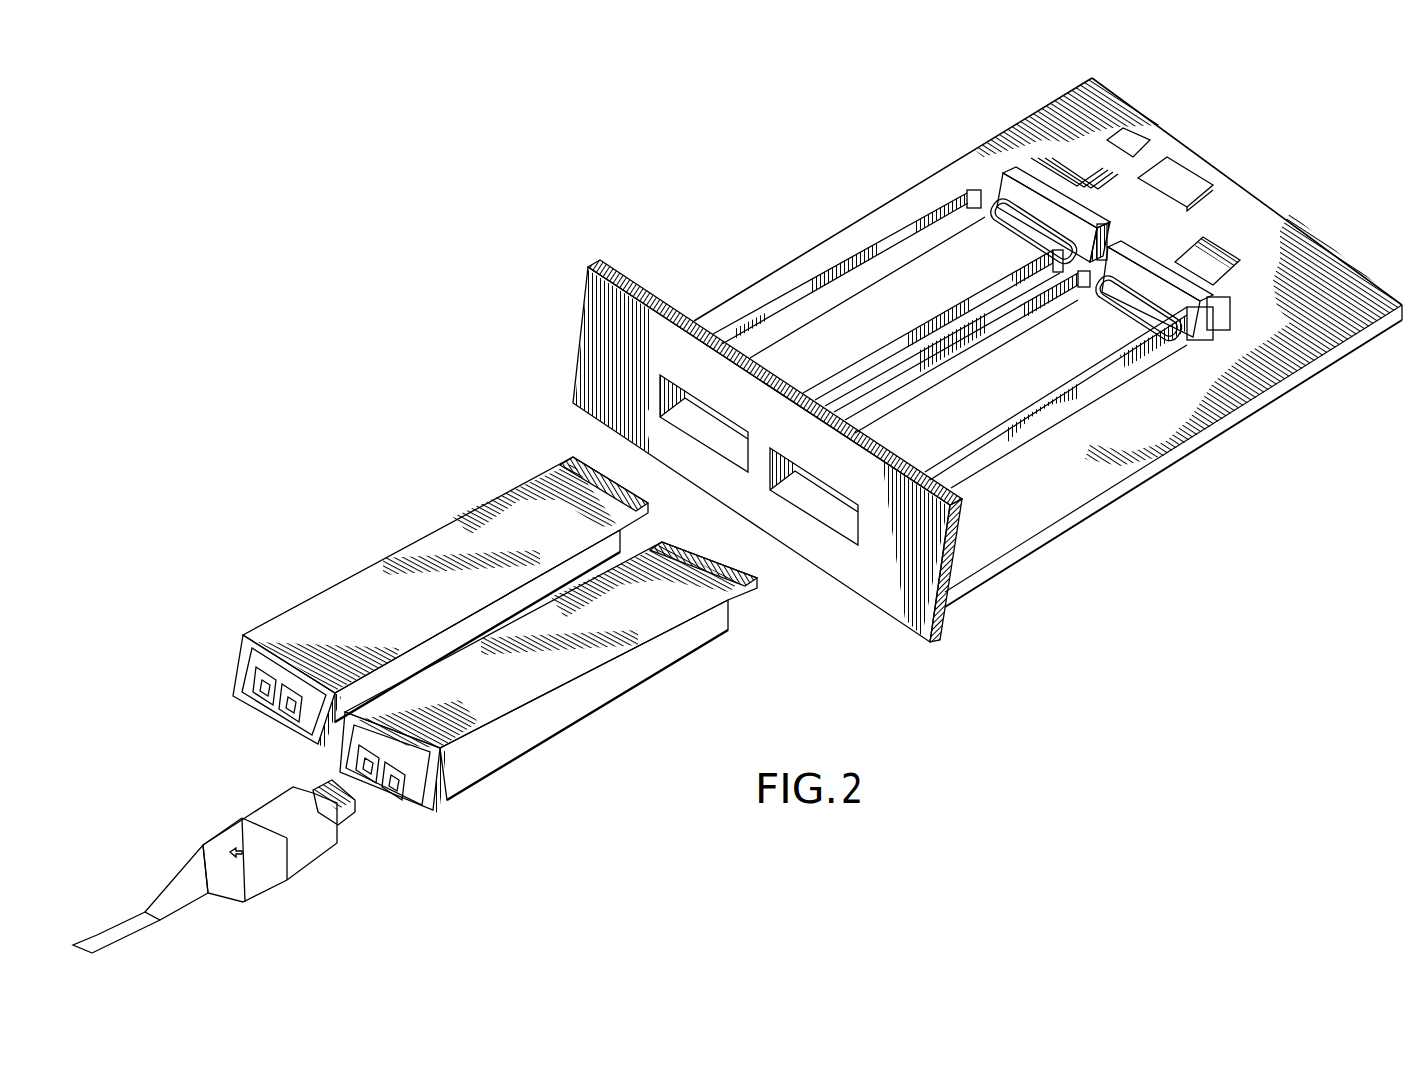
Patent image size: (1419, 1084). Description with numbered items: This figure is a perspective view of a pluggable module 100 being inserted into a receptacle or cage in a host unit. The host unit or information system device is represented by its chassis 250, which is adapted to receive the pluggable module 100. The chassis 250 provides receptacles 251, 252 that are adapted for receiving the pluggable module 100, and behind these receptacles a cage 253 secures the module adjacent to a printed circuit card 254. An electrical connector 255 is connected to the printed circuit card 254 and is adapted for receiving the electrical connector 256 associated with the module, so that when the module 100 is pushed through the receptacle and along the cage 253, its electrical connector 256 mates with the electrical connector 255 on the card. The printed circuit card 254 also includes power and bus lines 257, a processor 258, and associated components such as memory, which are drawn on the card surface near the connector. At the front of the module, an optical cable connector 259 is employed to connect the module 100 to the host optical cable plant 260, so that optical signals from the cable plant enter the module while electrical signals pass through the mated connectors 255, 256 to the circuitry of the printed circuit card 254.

The pluggable module 100 is at (262, 486).
The chassis 250 is at (700, 156).
The receptacle 251 is at (668, 396).
The receptacle 252 is at (838, 517).
The cage 253 is at (910, 296).
The printed circuit card 254 is at (1280, 222).
The electrical connector 255 is at (1001, 193).
The electrical connector 256 is at (562, 470).
The power and bus lines 257 is at (1180, 183).
The processor 258 is at (1128, 142).
The optical cable connector 259 is at (303, 872).
The host optical cable plant 260 is at (98, 935).